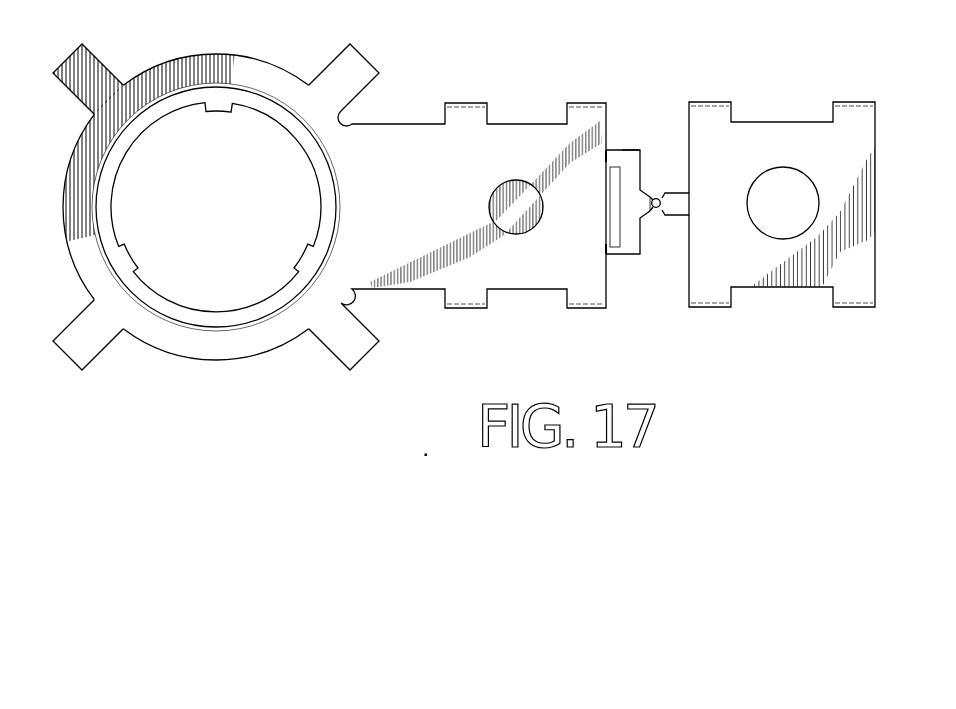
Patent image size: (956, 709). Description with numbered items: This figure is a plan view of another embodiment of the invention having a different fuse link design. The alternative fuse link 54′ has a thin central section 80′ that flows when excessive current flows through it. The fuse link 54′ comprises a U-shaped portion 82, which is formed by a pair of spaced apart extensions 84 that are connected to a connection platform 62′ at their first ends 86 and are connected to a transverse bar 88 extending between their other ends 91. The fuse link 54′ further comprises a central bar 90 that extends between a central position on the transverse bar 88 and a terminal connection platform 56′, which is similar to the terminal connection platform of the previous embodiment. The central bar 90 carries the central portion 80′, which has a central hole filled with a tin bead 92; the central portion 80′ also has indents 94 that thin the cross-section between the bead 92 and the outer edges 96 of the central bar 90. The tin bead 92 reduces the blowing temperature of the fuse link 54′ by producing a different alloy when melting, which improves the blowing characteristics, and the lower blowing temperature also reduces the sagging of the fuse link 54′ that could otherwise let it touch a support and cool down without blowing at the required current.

The fuse link 54′ is at (665, 92).
The terminal connection platform 56′ is at (768, 138).
The connection platform 62′ is at (528, 282).
The central section 80′ is at (652, 190).
The U-shaped portion 82 is at (638, 252).
The extensions 84 is at (606, 255).
The first ends 86 is at (612, 150).
The transverse bar 88 is at (636, 184).
The central bar 90 is at (678, 210).
The other ends 91 is at (631, 150).
The tin bead 92 is at (660, 216).
The indents 94 is at (662, 193).
The outer edges 96 is at (676, 186).